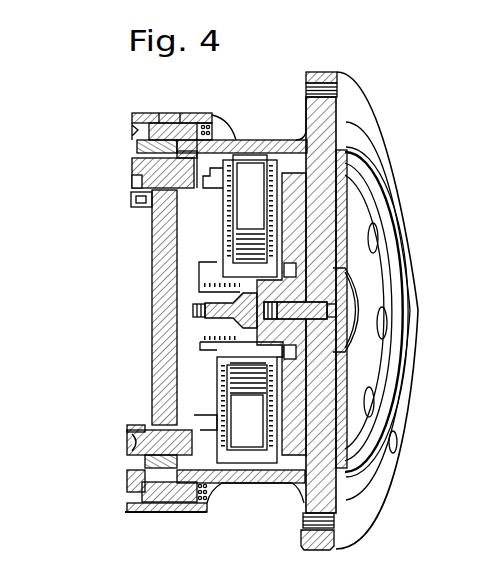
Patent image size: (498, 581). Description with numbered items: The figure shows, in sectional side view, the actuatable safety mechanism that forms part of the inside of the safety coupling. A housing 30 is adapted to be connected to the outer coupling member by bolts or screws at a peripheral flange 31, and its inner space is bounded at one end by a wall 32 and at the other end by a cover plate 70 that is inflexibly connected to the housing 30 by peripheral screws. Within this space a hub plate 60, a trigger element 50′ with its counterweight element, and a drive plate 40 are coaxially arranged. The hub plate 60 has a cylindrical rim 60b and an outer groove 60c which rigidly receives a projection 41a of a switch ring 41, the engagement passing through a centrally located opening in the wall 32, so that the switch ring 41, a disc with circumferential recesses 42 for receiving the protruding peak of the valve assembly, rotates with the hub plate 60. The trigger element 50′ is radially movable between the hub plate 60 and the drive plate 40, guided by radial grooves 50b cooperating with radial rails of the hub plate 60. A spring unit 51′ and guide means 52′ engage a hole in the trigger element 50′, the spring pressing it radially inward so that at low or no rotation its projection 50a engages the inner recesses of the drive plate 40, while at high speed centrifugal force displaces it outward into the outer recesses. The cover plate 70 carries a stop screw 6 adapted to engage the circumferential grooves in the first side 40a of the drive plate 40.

The trigger means / stop screw 6 is at (130, 178).
The housing 30 is at (358, 112).
The peripheral flange 31 is at (376, 528).
The wall 32 is at (283, 440).
The drive plate 40 is at (190, 229).
The first side of drive plate 40a is at (151, 256).
The switch ring 41 is at (368, 458).
The projection 41a is at (352, 342).
The circumferential recesses 42 is at (378, 232).
The trigger element 50′ is at (213, 374).
The projection 50a is at (205, 427).
The radial grooves 50b is at (213, 340).
The first spring unit 51′ is at (220, 389).
The guide means 52′ is at (244, 458).
The hub plate 60 is at (296, 189).
The cylindrical rim 60b is at (288, 140).
The groove 60c is at (323, 283).
The cover plate 70 is at (230, 313).